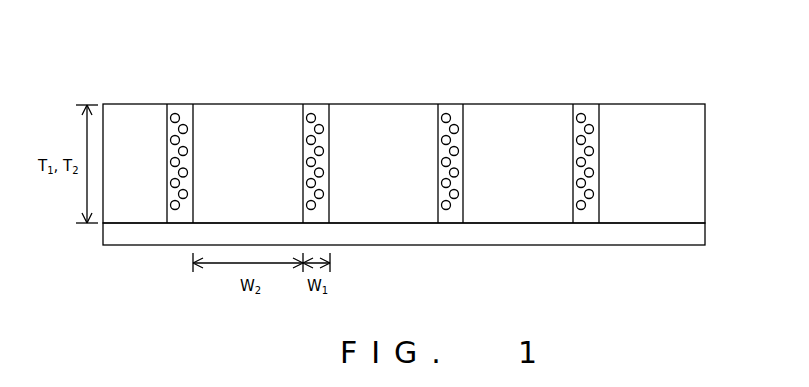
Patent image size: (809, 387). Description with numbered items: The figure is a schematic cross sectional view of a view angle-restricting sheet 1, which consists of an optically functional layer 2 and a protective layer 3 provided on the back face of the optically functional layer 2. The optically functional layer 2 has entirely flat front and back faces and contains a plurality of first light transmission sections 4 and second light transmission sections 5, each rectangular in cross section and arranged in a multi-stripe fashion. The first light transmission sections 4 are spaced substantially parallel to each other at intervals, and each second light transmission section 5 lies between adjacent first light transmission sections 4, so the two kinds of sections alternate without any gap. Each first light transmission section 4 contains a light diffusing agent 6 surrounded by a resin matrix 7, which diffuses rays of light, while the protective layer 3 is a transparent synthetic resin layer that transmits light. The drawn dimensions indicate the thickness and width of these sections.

The view angle-restricting sheet 1 is at (718, 70).
The optically functional layer 2 is at (721, 158).
The protective layer 3 is at (698, 232).
The first light transmission section 4 is at (585, 97).
The second light transmission section 5 is at (515, 108).
The light diffusing agent 6 is at (593, 197).
The resin matrix 7 is at (580, 211).